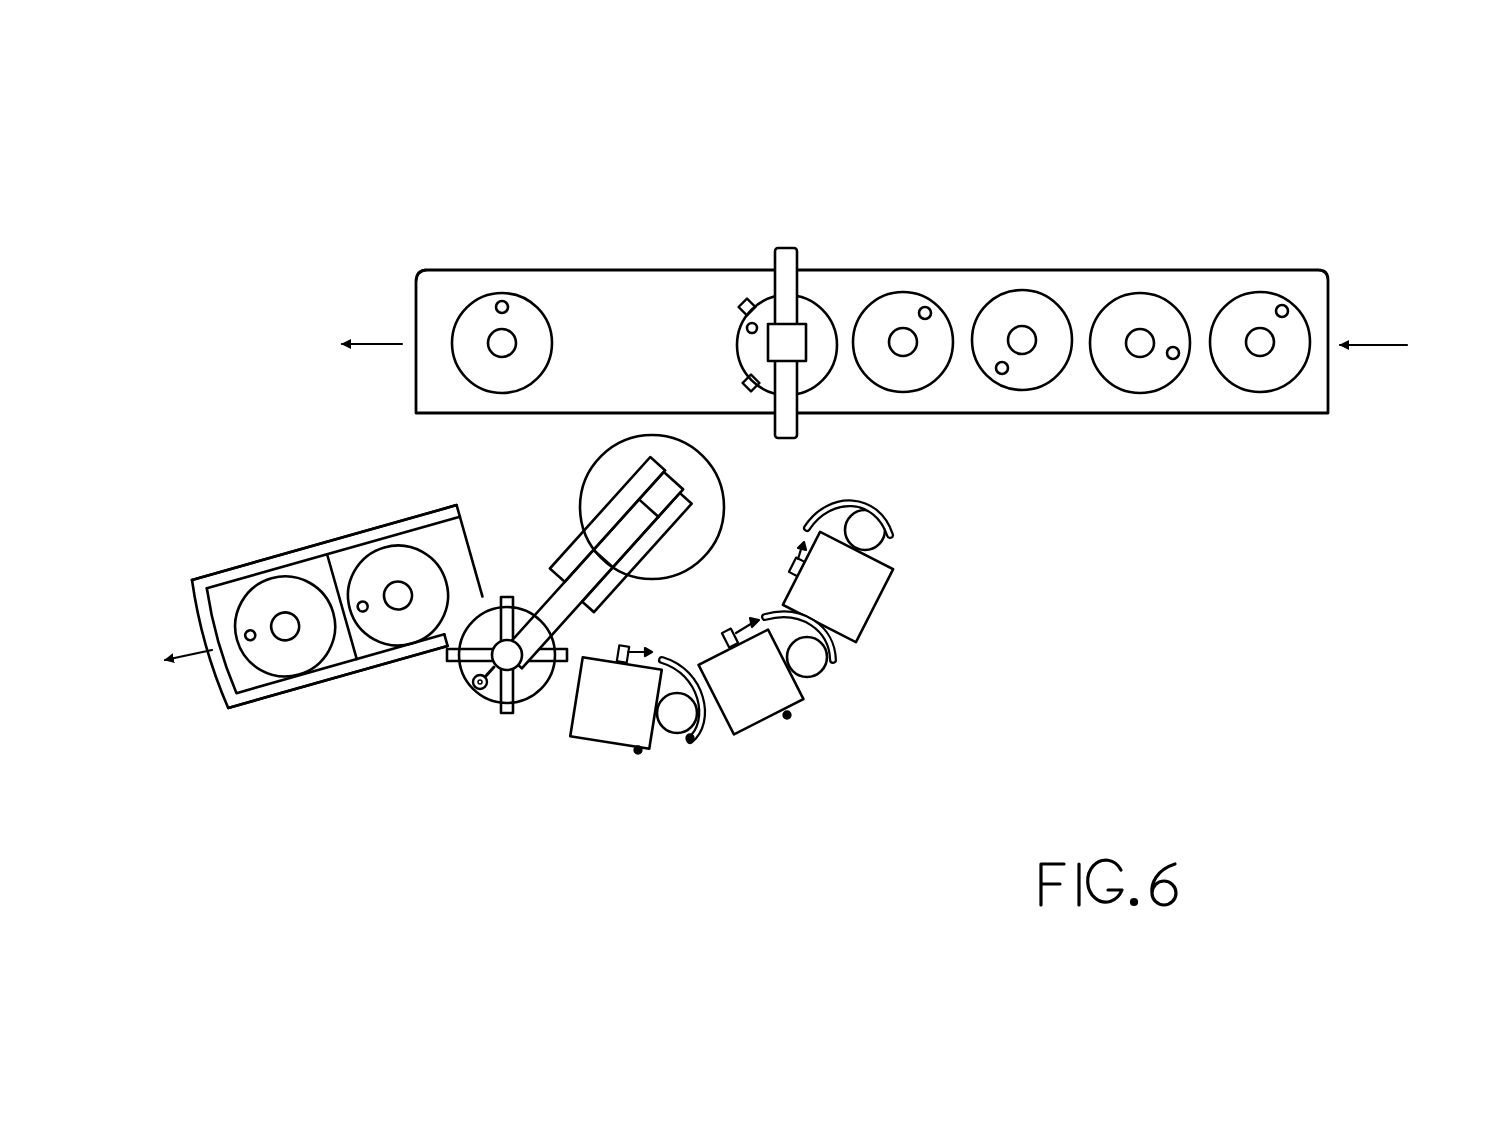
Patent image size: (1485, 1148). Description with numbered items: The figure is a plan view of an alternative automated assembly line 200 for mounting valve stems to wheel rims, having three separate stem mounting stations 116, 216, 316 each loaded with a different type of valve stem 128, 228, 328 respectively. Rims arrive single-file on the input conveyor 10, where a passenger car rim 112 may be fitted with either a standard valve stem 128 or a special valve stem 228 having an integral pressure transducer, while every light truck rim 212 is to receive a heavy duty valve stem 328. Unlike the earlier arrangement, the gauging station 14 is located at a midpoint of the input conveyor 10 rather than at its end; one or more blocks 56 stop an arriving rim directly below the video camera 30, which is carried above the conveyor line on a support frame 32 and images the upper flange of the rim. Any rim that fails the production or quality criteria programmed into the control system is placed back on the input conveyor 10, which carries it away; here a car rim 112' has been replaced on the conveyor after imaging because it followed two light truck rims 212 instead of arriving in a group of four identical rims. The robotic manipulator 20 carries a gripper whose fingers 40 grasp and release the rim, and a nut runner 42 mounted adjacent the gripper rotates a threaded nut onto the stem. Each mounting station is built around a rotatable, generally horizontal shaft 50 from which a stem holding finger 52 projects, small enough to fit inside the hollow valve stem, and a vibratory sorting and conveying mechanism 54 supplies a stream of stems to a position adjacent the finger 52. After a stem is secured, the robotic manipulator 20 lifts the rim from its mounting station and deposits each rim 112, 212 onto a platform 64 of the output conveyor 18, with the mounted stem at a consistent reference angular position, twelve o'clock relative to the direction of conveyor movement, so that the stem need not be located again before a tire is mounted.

The input conveyor 10 is at (1198, 207).
The gauging station 14 is at (832, 433).
The output conveyor 18 is at (291, 712).
The robotic manipulator 20 is at (600, 452).
The video camera 30 is at (797, 332).
The support frame 32 is at (780, 247).
The fingers 40 is at (505, 597).
The nut runner 42 is at (483, 690).
The shaft 50 is at (790, 567).
The stem holding finger 52 is at (797, 550).
The vibratory sorting and conveying mechanism 54 is at (890, 530).
The blocks 56 is at (742, 303).
The platforms 64 is at (417, 538).
The passenger car rim 112 is at (922, 343).
The rejected car rim 112' is at (426, 242).
The stem mounting station 116 is at (877, 603).
The standard valve stem 128 is at (805, 547).
The assembly line 200 is at (1048, 614).
The light truck rim 212 is at (823, 318).
The stem mounting station 216 is at (780, 717).
The special valve stem 228 is at (748, 620).
The stem mounting station 316 is at (638, 750).
The heavy duty valve stem 328 is at (647, 653).